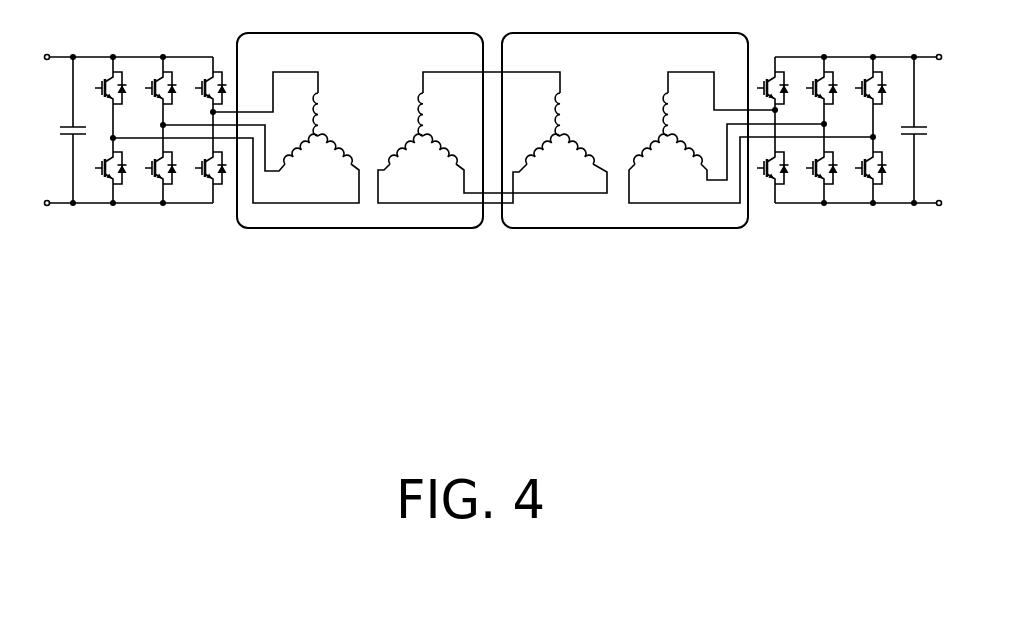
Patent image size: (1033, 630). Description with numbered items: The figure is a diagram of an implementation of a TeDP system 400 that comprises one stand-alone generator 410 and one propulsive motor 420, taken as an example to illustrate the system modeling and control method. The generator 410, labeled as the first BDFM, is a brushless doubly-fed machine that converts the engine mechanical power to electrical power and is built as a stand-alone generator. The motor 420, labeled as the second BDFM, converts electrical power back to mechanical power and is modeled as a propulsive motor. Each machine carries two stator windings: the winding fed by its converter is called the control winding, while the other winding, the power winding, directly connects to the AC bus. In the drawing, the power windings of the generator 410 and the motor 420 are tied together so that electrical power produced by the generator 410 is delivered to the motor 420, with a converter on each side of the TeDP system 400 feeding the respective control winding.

The TeDP system 400 is at (489, 206).
The stand-alone generator 410 is at (430, 48).
The propulsive motor 420 is at (692, 45).